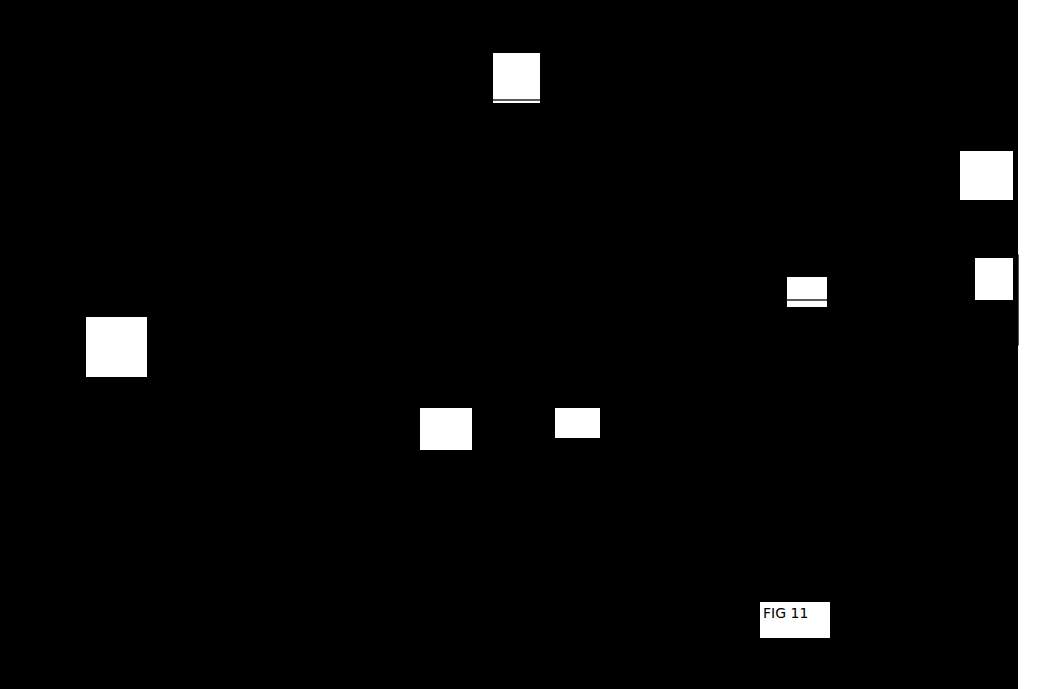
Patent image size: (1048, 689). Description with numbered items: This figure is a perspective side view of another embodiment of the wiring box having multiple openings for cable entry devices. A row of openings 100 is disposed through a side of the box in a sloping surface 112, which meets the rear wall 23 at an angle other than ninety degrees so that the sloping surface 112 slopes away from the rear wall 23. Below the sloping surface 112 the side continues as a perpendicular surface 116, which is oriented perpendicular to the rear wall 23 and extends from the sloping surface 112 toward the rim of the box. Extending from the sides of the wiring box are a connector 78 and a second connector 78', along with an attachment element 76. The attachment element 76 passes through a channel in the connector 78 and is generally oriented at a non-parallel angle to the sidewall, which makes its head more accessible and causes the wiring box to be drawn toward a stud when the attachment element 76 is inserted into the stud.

The rear wall 23 is at (583, 132).
The sloping surface 112 is at (945, 175).
The perpendicular surface 116 is at (930, 274).
The openings 100 is at (812, 253).
The connector 78 is at (152, 301).
The valve handle 78' is at (440, 375).
The attachment element 76 is at (568, 367).